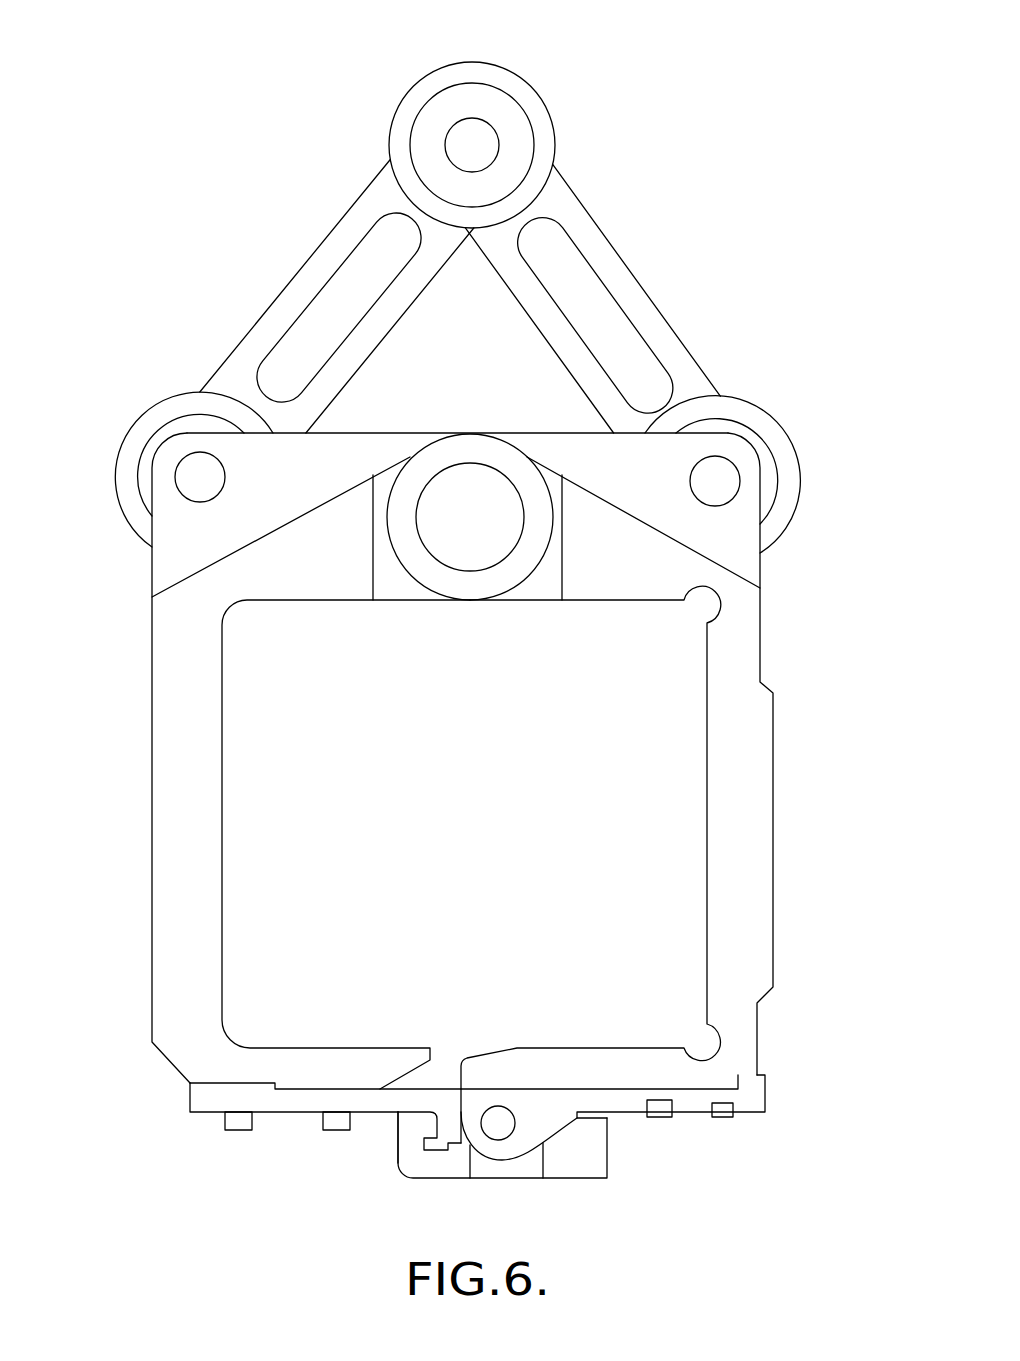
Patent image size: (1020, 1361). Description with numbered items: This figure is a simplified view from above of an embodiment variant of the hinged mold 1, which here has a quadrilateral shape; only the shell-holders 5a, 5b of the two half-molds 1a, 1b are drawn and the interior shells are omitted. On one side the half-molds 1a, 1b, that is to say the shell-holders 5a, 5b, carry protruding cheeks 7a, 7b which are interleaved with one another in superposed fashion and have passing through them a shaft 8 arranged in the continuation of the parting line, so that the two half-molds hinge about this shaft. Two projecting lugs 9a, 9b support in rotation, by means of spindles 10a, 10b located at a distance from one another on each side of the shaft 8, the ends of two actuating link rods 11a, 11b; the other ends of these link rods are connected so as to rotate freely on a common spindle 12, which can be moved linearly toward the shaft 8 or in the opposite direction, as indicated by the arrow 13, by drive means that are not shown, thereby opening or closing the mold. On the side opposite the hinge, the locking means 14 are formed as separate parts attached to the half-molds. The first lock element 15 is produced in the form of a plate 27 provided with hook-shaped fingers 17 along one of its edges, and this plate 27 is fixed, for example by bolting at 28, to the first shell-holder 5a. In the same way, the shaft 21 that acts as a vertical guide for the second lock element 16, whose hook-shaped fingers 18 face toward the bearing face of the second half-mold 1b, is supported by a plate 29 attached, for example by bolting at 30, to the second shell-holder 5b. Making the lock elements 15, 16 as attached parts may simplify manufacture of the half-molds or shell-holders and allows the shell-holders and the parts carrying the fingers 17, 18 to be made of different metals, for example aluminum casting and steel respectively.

The hinged mold 1 is at (785, 723).
The first half-mold 1a is at (150, 835).
The second half-mold 1b is at (775, 840).
The shell-holder 5a is at (177, 933).
The shell-holder 5b is at (760, 937).
The protruding cheek 7a is at (393, 577).
The protruding cheek 7b is at (548, 577).
The shaft 8 is at (470, 503).
The projecting lug 9a is at (188, 542).
The projecting lug 9b is at (704, 540).
The spindle 10a is at (198, 476).
The spindle 10b is at (720, 480).
The actuating link rod 11a is at (303, 293).
The actuating link rod 11b is at (623, 290).
The spindle 12 is at (490, 147).
The arrow 13 is at (473, 0).
The locking means 14 is at (396, 1188).
The first lock element 15 is at (447, 1075).
The second lock element 16 is at (575, 1075).
The hook-shaped fingers 17 is at (450, 1127).
The hook-shaped fingers 18 is at (427, 1127).
The rod 21 is at (498, 1123).
The plate 27 is at (258, 1100).
The bolting 28 is at (240, 1118).
The plate 29 is at (622, 1100).
The bolting 30 is at (662, 1112).